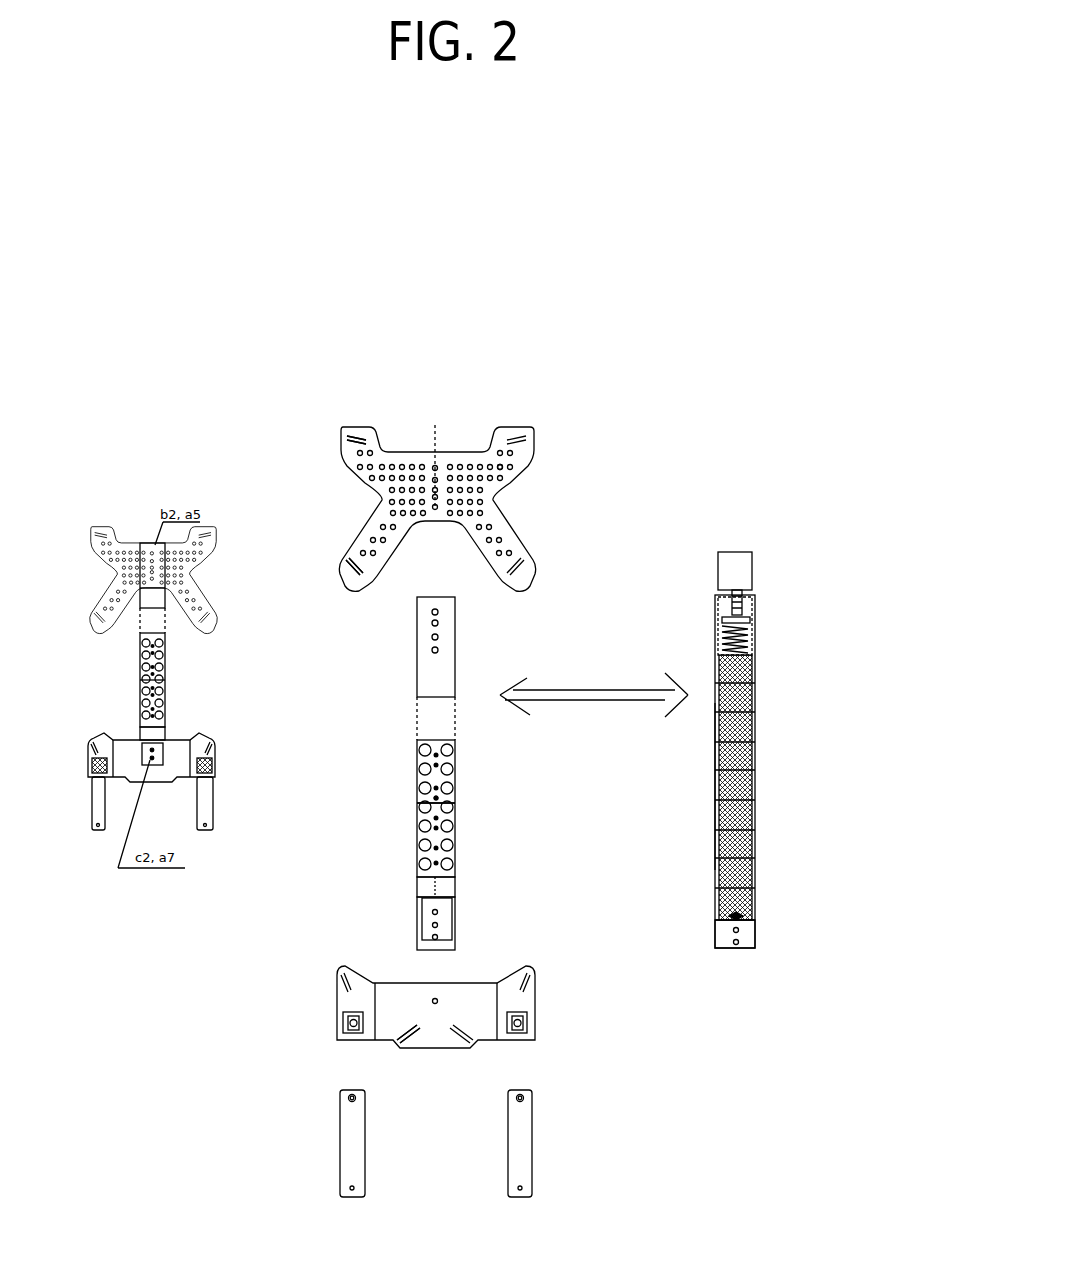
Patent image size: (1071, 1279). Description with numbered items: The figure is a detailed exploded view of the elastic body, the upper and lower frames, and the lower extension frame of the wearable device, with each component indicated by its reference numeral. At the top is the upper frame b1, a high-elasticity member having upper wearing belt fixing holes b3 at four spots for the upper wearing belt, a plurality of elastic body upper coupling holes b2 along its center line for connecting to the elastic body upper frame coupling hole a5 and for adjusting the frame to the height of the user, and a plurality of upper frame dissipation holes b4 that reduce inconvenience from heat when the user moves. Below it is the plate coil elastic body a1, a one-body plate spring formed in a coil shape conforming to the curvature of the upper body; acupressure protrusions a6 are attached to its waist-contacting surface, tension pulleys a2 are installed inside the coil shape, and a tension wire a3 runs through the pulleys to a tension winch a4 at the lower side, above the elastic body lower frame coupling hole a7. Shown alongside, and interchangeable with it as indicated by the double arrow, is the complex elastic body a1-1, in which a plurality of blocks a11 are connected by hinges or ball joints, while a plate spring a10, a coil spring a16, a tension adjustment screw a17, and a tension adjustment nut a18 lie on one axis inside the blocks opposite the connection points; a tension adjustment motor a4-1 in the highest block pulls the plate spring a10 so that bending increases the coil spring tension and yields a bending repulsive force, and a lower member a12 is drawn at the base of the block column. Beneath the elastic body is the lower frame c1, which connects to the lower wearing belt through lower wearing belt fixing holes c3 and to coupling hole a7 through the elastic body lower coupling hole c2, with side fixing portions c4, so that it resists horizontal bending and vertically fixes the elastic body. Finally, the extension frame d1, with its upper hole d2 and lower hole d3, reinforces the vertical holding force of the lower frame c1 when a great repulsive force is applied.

The upper frame b1 is at (487, 505).
The elastic body upper coupling holes b2 is at (462, 423).
The upper wearing belt fixing holes b3 is at (347, 557).
The upper frame dissipation holes b4 is at (500, 467).
The plate coil elastic body a1 is at (455, 707).
The tension pulleys a2 is at (437, 797).
The tension wire a3 is at (435, 888).
The tension winch a4 is at (452, 897).
The elastic body upper frame coupling hole a5 is at (437, 612).
The acupressure protrusions a6 is at (417, 803).
The elastic body lower frame coupling hole a7 is at (436, 925).
The plate spring a10 is at (756, 770).
The blocks a11 is at (716, 862).
The lower stopper a12 is at (887, 952).
The coil spring a16 is at (750, 648).
The tension adjustment screw a17 is at (738, 602).
The tension adjustment nut a18 is at (748, 625).
The complex elastic body a1-1 is at (756, 720).
The tension adjustment motor a4-1 is at (887, 572).
The lower frame c1 is at (470, 1000).
The elastic body lower coupling hole c2 is at (437, 1010).
The lower wearing belt fixing holes c3 is at (403, 1032).
The bracket side fixing part c4 is at (525, 1020).
The extension frame d1 is at (522, 1135).
The leg plate upper hole d2 is at (520, 1090).
The leg plate lower hole d3 is at (520, 1185).